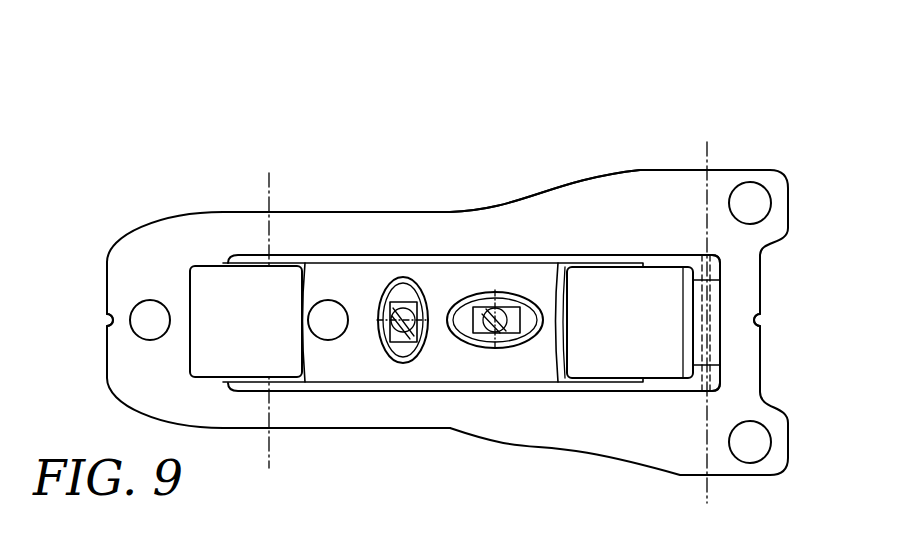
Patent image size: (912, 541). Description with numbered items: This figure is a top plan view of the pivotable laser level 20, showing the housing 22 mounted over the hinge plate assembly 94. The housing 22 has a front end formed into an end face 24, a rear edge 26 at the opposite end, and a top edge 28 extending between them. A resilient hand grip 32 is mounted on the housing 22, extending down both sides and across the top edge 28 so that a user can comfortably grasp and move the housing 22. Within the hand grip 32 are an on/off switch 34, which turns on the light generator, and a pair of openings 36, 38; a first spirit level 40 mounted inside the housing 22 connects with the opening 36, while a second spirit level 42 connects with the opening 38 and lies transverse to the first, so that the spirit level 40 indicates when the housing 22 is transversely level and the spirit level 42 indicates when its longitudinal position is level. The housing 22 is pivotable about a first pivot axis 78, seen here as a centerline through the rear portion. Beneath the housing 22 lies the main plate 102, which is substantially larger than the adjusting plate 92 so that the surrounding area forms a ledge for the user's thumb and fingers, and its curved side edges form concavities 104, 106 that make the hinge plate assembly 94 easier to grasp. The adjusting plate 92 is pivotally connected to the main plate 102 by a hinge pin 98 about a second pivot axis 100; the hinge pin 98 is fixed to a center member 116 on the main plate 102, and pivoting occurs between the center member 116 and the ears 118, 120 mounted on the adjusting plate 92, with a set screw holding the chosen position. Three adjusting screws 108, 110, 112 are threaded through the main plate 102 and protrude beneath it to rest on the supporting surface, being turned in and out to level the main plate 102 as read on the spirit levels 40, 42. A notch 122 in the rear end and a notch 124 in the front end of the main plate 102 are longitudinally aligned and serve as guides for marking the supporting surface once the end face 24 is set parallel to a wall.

The pivotable laser level 20 is at (138, 178).
The housing 22 is at (658, 255).
The end face 24 is at (695, 330).
The rear edge 26 is at (190, 288).
The top edge 28 is at (602, 283).
The hand grip 32 is at (335, 362).
The on/off switch 34 is at (325, 306).
The opening 36 is at (403, 290).
The opening 38 is at (493, 315).
The first spirit level 40 is at (405, 343).
The second spirit level 42 is at (497, 335).
The first pivot axis 78 is at (269, 176).
The adjusting plate 92 is at (550, 255).
The hinge plate assembly 94 is at (527, 200).
The hinge pin 98 is at (700, 308).
The second pivot axis 100 is at (706, 160).
The main plate 102 is at (650, 433).
The concavity 104 is at (427, 212).
The concavity 106 is at (430, 428).
The adjusting screw 108 is at (143, 327).
The adjusting screw 110 is at (752, 447).
The adjusting screw 112 is at (753, 198).
The center member 116 is at (715, 302).
The ear 118 is at (717, 380).
The ear 120 is at (717, 260).
The notch 122 is at (107, 320).
The notch 124 is at (760, 320).